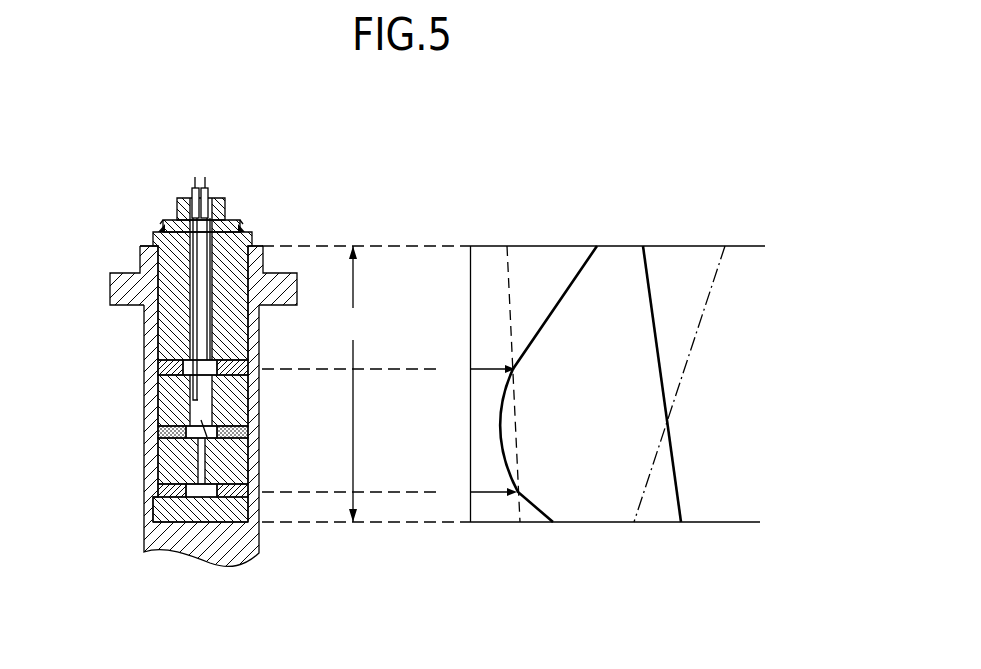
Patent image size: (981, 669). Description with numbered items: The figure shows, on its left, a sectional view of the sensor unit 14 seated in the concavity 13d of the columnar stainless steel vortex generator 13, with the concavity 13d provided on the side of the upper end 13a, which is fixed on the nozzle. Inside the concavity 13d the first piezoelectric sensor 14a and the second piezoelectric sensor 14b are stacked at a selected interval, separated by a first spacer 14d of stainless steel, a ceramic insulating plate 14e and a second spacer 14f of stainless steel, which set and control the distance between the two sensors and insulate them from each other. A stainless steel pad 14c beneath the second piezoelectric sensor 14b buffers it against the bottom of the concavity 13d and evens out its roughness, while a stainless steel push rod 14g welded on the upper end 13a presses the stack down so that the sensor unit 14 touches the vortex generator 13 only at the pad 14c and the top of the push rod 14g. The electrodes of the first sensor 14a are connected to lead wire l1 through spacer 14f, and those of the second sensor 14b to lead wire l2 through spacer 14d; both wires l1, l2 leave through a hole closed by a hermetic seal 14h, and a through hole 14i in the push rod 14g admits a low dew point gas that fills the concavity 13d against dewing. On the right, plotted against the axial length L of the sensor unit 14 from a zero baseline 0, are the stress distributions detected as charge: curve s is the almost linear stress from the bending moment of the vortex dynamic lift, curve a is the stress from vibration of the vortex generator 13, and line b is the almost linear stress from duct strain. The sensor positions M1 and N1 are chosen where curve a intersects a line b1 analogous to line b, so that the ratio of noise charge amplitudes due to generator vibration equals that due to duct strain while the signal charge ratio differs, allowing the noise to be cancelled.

The vortex generator 13 is at (198, 435).
The upper end 13a is at (120, 288).
The concavity 13d is at (256, 412).
The sensor unit 14 is at (242, 172).
The first piezoelectric sensor 14a is at (256, 380).
The second piezoelectric sensor 14b is at (155, 500).
The pad 14c is at (258, 523).
The first spacer 14d is at (178, 469).
The insulating plate 14e is at (172, 432).
The second spacer 14f is at (172, 395).
The push rod 14g is at (173, 313).
The hermetic seal 14h is at (190, 220).
The through hole 14i is at (256, 316).
The lead wire l1 is at (160, 229).
The lead wire l2 is at (240, 229).
The length L is at (352, 384).
The curve a is at (570, 285).
The curve b is at (650, 278).
The distribution line b1 is at (508, 285).
The curve S s is at (700, 333).
The point M1 is at (477, 372).
The point N1 is at (478, 494).
The origin 0 is at (470, 538).